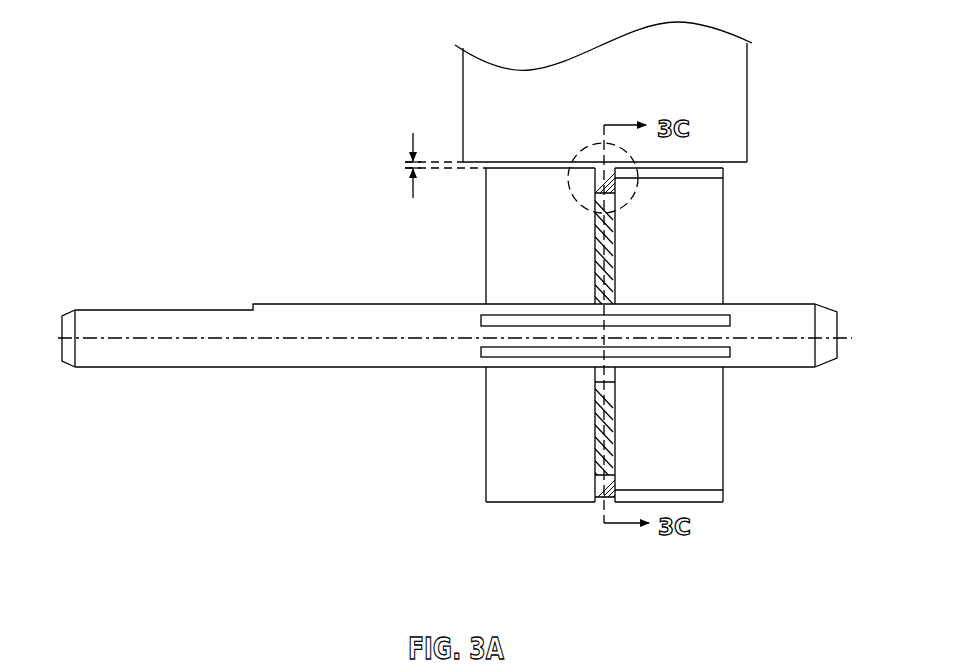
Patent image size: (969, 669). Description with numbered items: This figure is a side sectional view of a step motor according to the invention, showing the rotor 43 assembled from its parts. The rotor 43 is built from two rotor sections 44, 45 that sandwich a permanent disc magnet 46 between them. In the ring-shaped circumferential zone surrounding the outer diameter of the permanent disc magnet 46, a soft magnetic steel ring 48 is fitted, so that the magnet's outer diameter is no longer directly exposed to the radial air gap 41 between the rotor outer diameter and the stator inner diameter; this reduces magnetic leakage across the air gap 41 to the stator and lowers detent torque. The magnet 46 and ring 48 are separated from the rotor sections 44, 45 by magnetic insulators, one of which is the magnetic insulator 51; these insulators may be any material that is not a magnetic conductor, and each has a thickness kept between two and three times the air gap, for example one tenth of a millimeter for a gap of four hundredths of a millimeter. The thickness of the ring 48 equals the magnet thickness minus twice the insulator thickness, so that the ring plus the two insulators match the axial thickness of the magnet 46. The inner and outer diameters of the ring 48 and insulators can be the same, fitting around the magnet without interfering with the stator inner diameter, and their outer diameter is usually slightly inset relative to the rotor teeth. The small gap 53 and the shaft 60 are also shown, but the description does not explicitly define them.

The radial air gap 41 is at (462, 77).
The rotor 43 is at (604, 369).
The rotor section 44 is at (495, 415).
The rotor section 45 is at (701, 369).
The permanent disc magnet 46 is at (600, 438).
The soft magnetic steel ring 48 is at (599, 501).
The magnetic insulator 51 is at (686, 502).
The gap 53 is at (412, 143).
The shaft 60 is at (125, 357).